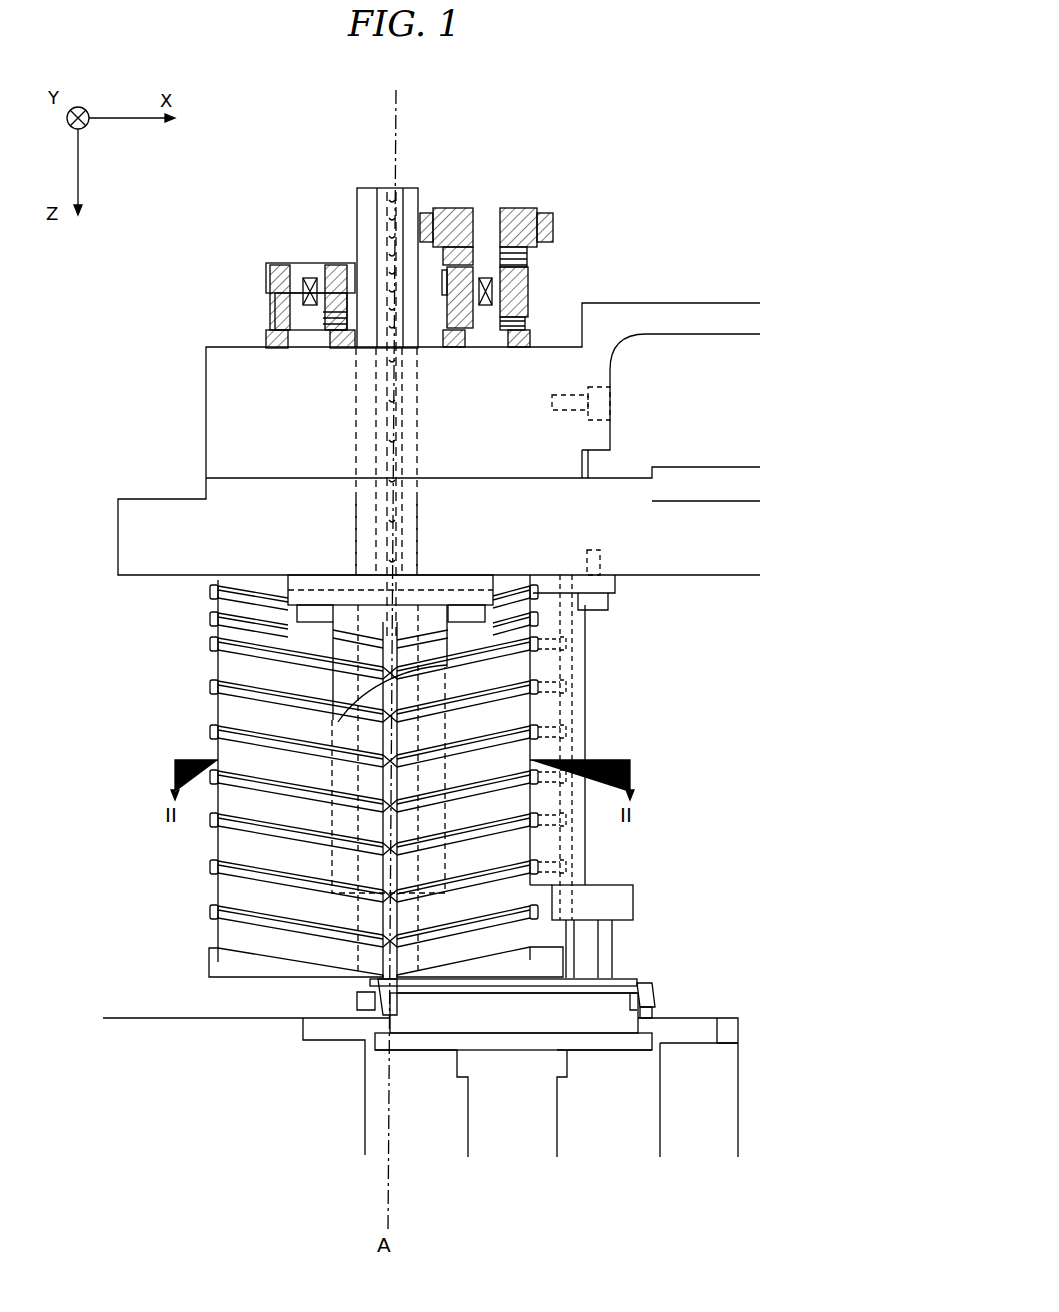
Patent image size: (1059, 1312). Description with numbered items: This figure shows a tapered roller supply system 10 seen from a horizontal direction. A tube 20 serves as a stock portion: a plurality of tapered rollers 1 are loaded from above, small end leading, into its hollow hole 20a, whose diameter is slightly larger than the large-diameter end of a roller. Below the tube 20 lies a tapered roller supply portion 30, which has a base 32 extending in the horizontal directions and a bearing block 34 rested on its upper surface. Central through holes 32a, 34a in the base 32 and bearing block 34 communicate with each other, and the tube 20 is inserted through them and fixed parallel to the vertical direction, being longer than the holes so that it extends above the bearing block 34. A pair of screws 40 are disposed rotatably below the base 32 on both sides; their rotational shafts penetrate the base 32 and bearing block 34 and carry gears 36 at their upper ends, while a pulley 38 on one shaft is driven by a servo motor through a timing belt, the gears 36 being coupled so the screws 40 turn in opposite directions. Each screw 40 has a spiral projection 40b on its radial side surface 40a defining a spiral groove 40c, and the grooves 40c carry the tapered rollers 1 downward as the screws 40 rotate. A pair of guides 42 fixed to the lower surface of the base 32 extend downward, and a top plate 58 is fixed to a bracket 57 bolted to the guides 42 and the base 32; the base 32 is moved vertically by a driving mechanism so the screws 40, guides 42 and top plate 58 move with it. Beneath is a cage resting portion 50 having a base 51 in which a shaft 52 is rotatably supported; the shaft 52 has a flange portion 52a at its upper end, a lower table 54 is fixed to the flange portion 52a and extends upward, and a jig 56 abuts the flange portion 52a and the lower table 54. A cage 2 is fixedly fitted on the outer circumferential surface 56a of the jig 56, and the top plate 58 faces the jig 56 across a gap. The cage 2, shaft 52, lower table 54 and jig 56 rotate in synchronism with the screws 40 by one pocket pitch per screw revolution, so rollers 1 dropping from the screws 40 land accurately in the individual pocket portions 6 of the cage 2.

The tapered roller supply system 10 is at (716, 180).
The tube 20 is at (357, 200).
The hollow hole 20a is at (393, 188).
The tapered roller 1 is at (385, 215).
The pulley 38 is at (537, 228).
The gear 36 is at (518, 284).
The bearing block 34 is at (237, 412).
The through hole 34a is at (356, 379).
The base 32 is at (140, 545).
The through hole 32a is at (356, 508).
The guide 42 is at (330, 586).
The tapered roller supply portion 30 is at (156, 650).
The screw 40 is at (395, 779).
The radial side surface 40a is at (218, 835).
The spiral projection 40b is at (245, 886).
The spiral groove 40c is at (252, 928).
The bracket 57 is at (618, 900).
The top plate 58 is at (590, 978).
The jig 56 is at (613, 1008).
The cage 2 is at (656, 985).
The pocket portion 6 is at (657, 1000).
The outer circumferential surface 56a is at (655, 1016).
The lower table 54 is at (714, 1025).
The flange portion 52a is at (652, 1040).
The base 51 is at (612, 1110).
The shaft 52 is at (542, 1130).
The cage resting portion 50 is at (357, 1110).